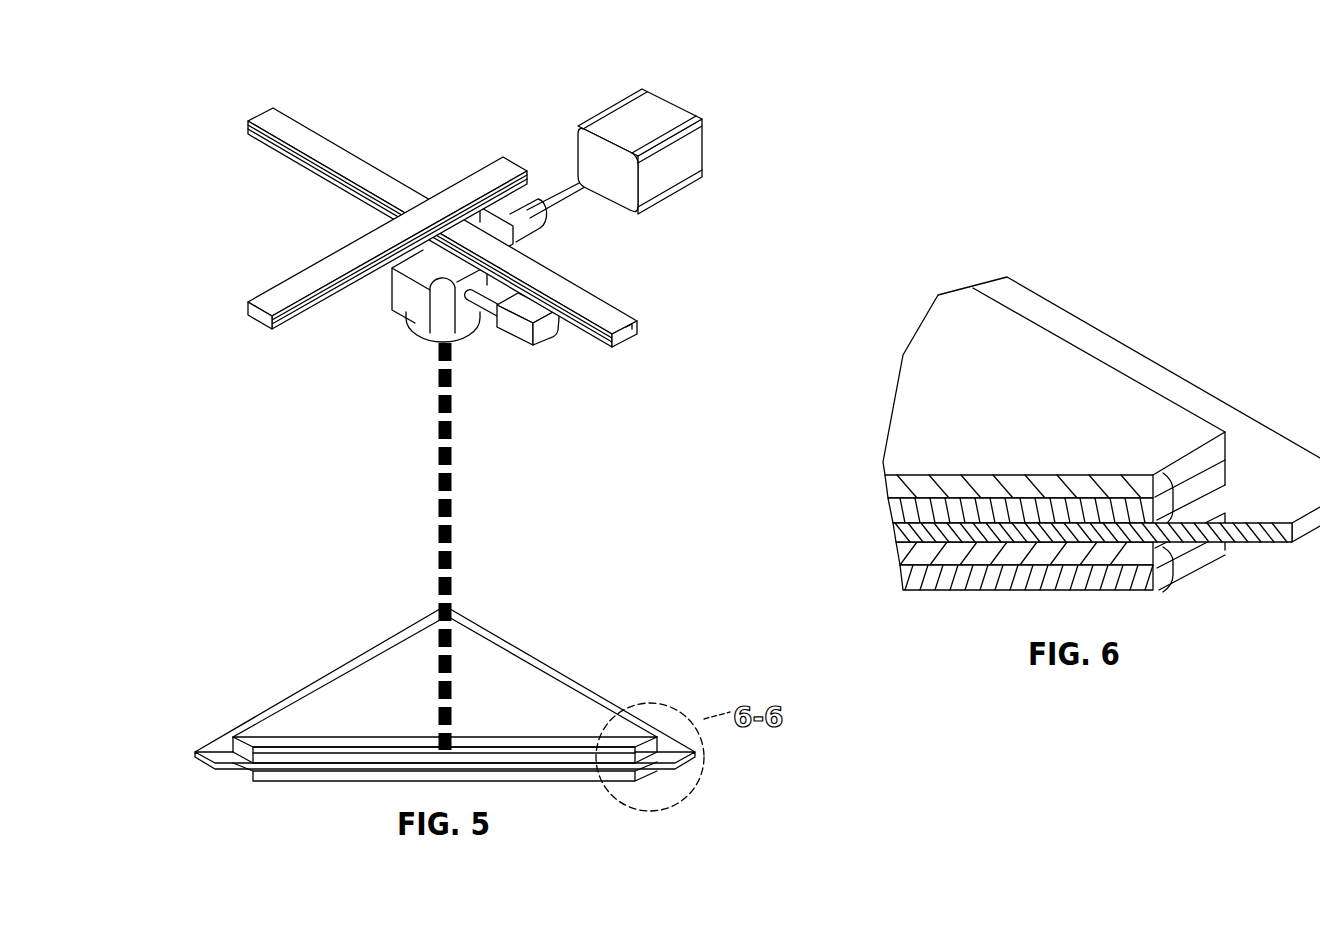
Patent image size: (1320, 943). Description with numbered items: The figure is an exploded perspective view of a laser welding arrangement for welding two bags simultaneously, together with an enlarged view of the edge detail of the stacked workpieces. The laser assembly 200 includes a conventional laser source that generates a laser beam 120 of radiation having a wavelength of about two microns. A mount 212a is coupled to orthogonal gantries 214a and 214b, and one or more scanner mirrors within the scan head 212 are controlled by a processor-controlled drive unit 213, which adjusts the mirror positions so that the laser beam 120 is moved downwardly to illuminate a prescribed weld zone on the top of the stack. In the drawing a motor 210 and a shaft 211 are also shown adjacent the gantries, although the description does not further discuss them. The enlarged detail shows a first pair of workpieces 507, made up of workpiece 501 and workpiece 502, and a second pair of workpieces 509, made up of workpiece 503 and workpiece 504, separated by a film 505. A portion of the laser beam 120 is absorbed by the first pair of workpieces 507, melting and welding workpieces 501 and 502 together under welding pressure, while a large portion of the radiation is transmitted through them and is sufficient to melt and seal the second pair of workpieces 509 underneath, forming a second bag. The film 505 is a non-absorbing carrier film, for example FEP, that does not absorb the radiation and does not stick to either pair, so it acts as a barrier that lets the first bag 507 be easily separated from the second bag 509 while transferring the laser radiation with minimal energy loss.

In FIG. 5, the laser assembly 200 is at (760, 108).
In FIG. 5, the motor 210 is at (643, 112).
In FIG. 5, the drive shaft 211 is at (553, 203).
In FIG. 5, the scan head 212 is at (390, 310).
In FIG. 5, the mount 212a is at (445, 262).
In FIG. 5, the drive unit 213 is at (520, 332).
In FIG. 5, the gantry 214a is at (292, 128).
In FIG. 5, the gantry 214b is at (287, 293).
In FIG. 5, the laser beam 120 is at (437, 479).
In FIG. 6, the workpiece 501 is at (893, 488).
In FIG. 6, the workpiece 502 is at (897, 513).
In FIG. 6, the workpiece 503 is at (905, 555).
In FIG. 6, the workpiece 504 is at (907, 577).
In FIG. 6, the film 505 is at (900, 537).
In FIG. 6, the first pair of workpieces 507 is at (1172, 494).
In FIG. 6, the second pair of workpieces 509 is at (1173, 566).